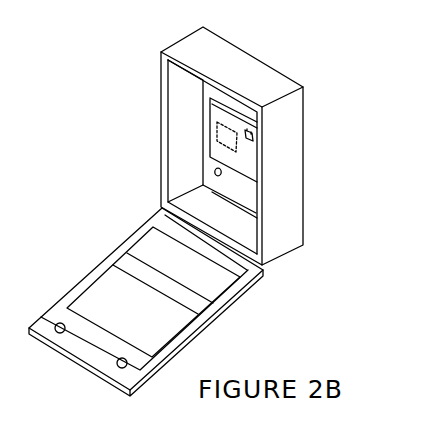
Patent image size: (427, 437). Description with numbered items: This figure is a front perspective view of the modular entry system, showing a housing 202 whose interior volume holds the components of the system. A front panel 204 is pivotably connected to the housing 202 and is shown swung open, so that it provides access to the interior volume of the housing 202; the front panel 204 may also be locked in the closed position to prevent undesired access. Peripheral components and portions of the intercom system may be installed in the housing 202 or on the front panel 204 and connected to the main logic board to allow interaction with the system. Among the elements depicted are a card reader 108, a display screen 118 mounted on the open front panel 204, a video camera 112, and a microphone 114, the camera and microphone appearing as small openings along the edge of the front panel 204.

The housing 202 is at (302, 128).
The front panel 204 is at (147, 223).
The card reader 108 is at (223, 283).
The display screen 118 is at (115, 284).
The video camera 112 is at (54, 327).
The microphone 114 is at (121, 369).